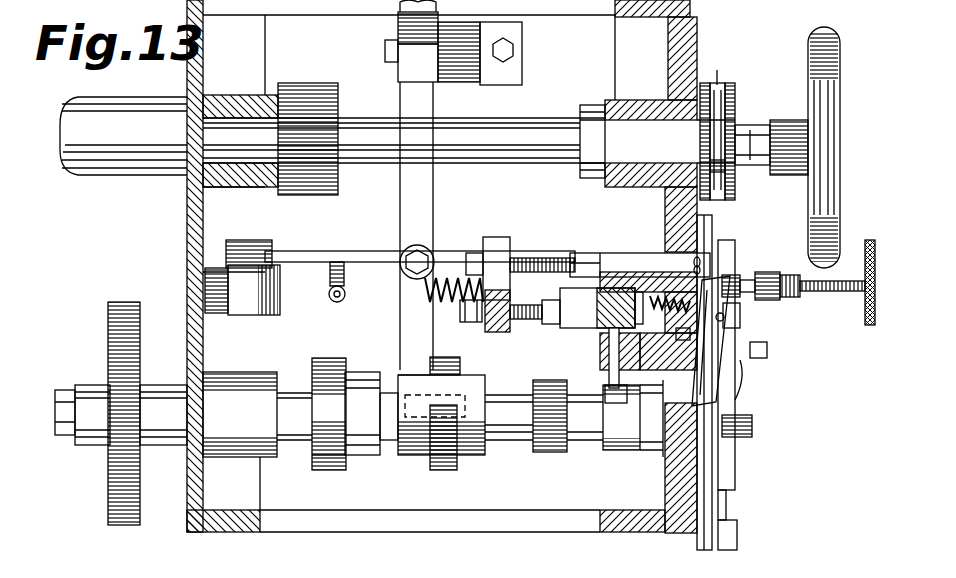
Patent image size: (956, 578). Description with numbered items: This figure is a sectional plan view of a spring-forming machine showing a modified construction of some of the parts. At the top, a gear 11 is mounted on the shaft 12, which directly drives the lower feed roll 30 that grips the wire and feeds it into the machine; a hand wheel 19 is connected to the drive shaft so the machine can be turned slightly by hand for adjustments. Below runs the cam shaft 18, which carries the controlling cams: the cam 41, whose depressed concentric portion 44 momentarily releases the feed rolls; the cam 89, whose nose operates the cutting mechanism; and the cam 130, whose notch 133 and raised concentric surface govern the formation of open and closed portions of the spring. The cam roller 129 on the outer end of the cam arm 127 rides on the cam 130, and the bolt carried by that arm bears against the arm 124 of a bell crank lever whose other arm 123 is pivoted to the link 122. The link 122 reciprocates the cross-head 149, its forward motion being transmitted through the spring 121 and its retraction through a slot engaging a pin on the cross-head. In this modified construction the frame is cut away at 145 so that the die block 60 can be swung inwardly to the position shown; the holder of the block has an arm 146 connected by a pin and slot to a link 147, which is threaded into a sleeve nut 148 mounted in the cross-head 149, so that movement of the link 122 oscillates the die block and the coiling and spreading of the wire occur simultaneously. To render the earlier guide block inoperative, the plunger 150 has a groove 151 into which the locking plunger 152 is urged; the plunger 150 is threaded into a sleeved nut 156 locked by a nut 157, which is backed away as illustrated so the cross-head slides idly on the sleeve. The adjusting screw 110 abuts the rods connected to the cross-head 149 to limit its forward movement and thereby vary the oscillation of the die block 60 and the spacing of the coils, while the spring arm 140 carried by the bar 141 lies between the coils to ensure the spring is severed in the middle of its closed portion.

The gear 11 is at (312, 95).
The shaft 12 is at (553, 145).
The shaft 18 is at (506, 423).
The hand wheel 19 is at (826, 124).
The lower feed roll 30 is at (723, 126).
The cam 41 is at (336, 456).
The depressed concentric portion 44 is at (320, 392).
The die block 60 is at (700, 345).
The cam 89 is at (543, 359).
The adjusting screw 110 is at (872, 240).
The spring 121 is at (454, 305).
The link 122 is at (382, 265).
The arm of bell crank lever 123 is at (238, 253).
The arm of bell crank lever 124 is at (318, 256).
The cam arm 127 is at (403, 193).
The cam roller 129 is at (460, 366).
The cam 130 is at (448, 460).
The notch 133 is at (430, 364).
The spring arm 140 is at (740, 316).
The bar 141 is at (747, 376).
The cut-away portion of frame 145 is at (720, 392).
The arm 146 is at (717, 251).
The link 147 is at (655, 270).
The sleeve nut 148 is at (478, 256).
The cross-head 149 is at (500, 243).
The plunger 150 is at (601, 308).
The groove 151 is at (603, 351).
The locking plunger 152 is at (608, 374).
The sleeved nut 156 is at (477, 323).
The nut 157 is at (538, 318).